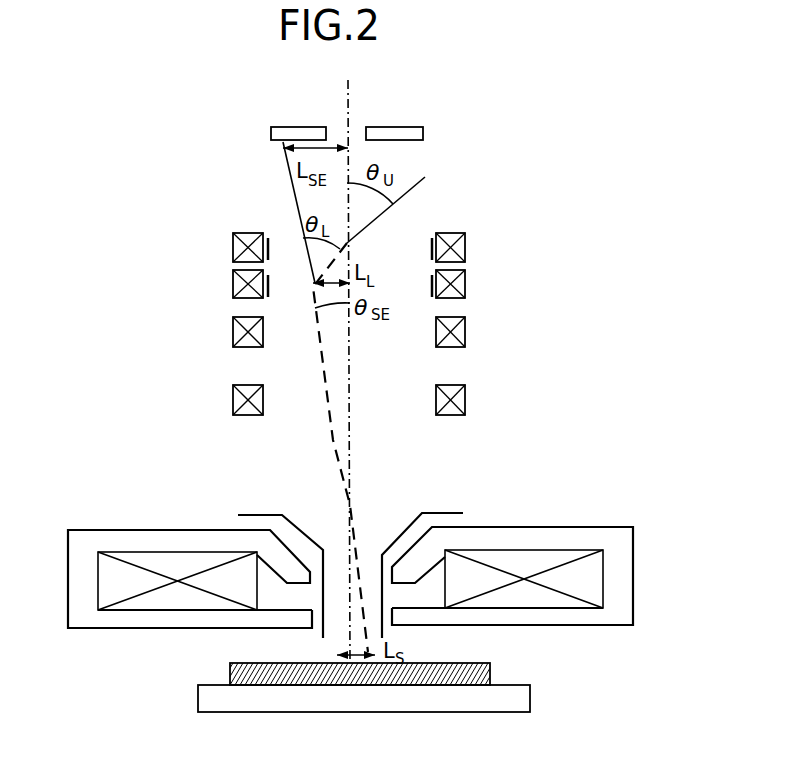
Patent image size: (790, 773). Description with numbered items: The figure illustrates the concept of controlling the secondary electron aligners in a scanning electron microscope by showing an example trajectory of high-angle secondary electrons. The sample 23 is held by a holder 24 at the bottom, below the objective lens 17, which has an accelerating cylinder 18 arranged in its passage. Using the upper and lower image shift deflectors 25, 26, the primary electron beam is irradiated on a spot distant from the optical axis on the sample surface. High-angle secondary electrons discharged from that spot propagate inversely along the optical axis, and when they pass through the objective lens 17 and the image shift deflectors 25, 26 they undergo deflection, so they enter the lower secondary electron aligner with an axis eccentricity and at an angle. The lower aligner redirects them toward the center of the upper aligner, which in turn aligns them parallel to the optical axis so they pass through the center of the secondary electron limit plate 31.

The secondary electron limit plate 31 is at (271, 135).
The upper image shift deflector 25 is at (233, 333).
The lower image shift deflector 26 is at (233, 400).
The objective lens 17 is at (83, 528).
The accelerating cylinder 18 is at (240, 515).
The sample 23 is at (230, 670).
The holder 24 is at (198, 697).